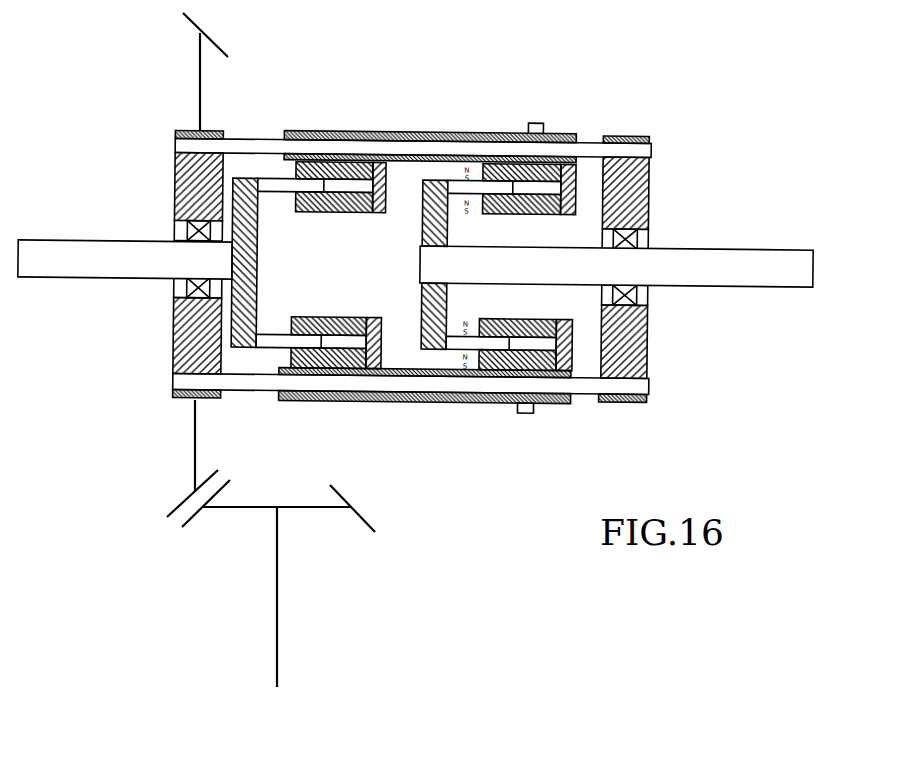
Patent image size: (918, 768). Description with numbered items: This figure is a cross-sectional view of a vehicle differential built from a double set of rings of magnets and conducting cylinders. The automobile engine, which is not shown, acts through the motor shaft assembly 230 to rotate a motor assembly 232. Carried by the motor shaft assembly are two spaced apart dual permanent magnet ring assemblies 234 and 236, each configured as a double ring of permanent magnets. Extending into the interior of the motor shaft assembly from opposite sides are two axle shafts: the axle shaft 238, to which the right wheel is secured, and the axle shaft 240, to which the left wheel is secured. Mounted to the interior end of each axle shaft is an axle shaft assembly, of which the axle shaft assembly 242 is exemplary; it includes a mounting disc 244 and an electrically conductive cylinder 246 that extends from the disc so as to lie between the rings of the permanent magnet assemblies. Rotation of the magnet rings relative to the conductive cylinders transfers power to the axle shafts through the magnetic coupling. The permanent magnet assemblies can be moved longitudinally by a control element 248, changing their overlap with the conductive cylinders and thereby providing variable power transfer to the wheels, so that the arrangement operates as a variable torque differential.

The motor shaft assembly 230 is at (277, 628).
The motor assembly 232 is at (150, 346).
The dual permanent magnet ring assembly 234 is at (406, 180).
The dual permanent magnet ring assembly 236 is at (581, 177).
The axle shaft 238 is at (750, 275).
The axle shaft 240 is at (67, 253).
The axle shaft assembly 242 is at (402, 247).
The mounting disc 244 is at (422, 202).
The electrically conductive cylinder 246 is at (455, 350).
The control element 248 is at (482, 432).